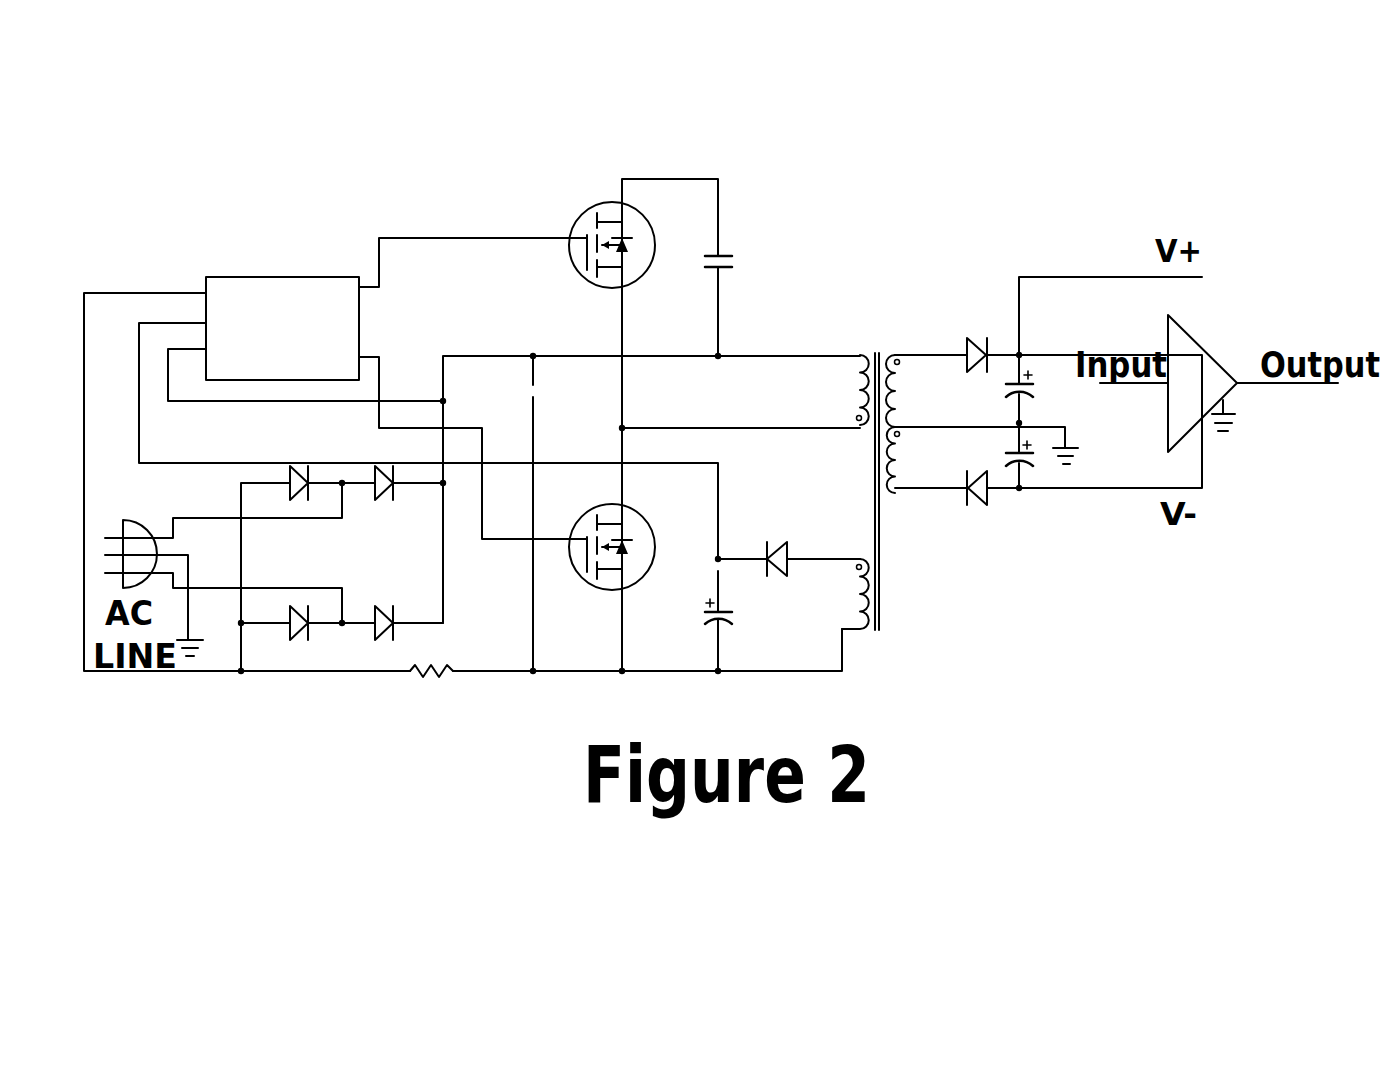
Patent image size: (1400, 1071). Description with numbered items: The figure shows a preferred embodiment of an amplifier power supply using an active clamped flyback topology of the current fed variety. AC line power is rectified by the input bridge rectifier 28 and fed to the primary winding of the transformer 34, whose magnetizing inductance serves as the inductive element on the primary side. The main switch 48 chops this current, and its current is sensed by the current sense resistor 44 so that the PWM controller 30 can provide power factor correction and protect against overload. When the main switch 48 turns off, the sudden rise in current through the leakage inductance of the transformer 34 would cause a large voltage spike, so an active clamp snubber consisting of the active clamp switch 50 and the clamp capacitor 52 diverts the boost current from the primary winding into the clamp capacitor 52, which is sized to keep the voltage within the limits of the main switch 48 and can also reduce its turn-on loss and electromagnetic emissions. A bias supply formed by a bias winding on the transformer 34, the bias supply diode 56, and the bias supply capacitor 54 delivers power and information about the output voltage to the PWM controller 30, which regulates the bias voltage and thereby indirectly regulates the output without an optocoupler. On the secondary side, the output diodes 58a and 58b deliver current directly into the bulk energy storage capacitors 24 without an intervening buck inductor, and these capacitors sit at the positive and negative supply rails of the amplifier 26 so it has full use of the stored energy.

The bulk energy storage capacitors 24 is at (1038, 377).
The amplifier 26 is at (1220, 362).
The input bridge rectifier 28 is at (372, 563).
The PWM controller 30 is at (267, 270).
The transformer 34 is at (868, 347).
The current sense resistor 44 is at (450, 678).
The main switch 48 is at (650, 520).
The active clamp switch 50 is at (650, 268).
The clamp capacitor 52 is at (735, 250).
The bias supply capacitor 54 is at (735, 615).
The bias supply diode 56 is at (788, 542).
The output diode 58a is at (978, 332).
The output diode 58b is at (988, 508).